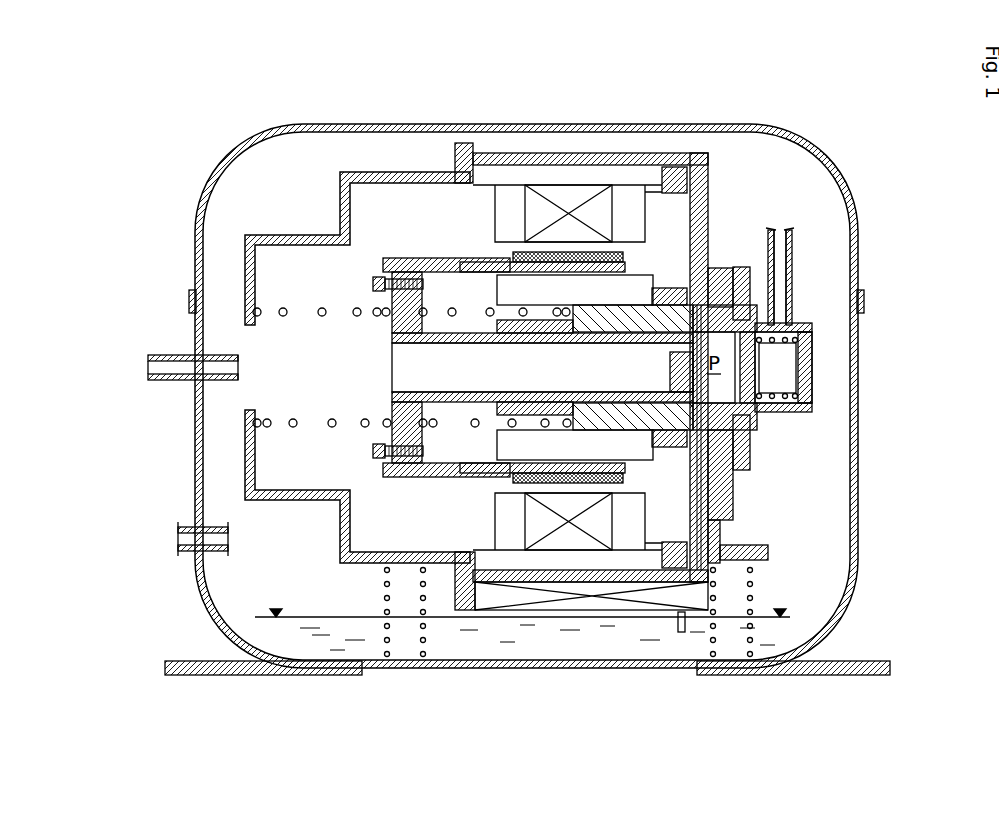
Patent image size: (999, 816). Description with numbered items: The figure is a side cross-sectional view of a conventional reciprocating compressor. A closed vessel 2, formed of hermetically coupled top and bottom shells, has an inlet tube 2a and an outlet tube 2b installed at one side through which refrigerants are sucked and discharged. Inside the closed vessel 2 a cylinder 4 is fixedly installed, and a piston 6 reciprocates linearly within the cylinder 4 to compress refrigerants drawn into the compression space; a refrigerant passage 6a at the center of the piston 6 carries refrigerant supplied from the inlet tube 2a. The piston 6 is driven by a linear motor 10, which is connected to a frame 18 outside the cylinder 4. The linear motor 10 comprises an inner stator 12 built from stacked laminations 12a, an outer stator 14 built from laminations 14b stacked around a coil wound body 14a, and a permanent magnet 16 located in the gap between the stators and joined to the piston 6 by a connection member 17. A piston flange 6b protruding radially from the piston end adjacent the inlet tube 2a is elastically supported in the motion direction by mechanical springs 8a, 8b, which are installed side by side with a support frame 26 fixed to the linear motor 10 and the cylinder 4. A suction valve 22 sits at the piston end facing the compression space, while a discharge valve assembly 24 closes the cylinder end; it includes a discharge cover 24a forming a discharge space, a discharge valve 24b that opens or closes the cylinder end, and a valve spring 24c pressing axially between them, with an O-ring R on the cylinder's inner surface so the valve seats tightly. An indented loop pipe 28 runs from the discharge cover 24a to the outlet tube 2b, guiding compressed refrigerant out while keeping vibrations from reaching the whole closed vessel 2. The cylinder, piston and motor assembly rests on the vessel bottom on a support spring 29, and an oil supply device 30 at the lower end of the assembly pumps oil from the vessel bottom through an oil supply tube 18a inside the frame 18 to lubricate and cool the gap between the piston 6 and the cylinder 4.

The closed vessel 2 is at (300, 127).
The inlet tube 2a is at (171, 355).
The outlet tube 2b is at (186, 527).
The cylinder 4 is at (723, 277).
The piston 6 is at (435, 281).
The refrigerant passage 6a is at (468, 360).
The piston flange 6b is at (410, 265).
The mechanical spring 8a is at (293, 428).
The mechanical spring 8b is at (475, 428).
The linear motor 10 is at (581, 379).
The inner stator 12 is at (512, 262).
The laminations 12a is at (513, 446).
The outer stator 14 is at (590, 400).
The coil wound body 14a is at (565, 541).
The laminations 14b is at (612, 562).
The permanent magnet 16 is at (612, 253).
The connection member 17 is at (382, 277).
The frame 18 is at (727, 533).
The oil supply tube 18a is at (699, 498).
The suction valve 22 is at (694, 154).
The discharge valve assembly 24 is at (866, 406).
The discharge cover 24a is at (808, 395).
The discharge valve 24b is at (775, 411).
The valve spring 24c is at (790, 403).
The support frame 26 is at (255, 428).
The loop pipe 28 is at (793, 247).
The support spring 29 is at (386, 638).
The oil supply device 30 is at (653, 618).
The O-ring R is at (800, 332).